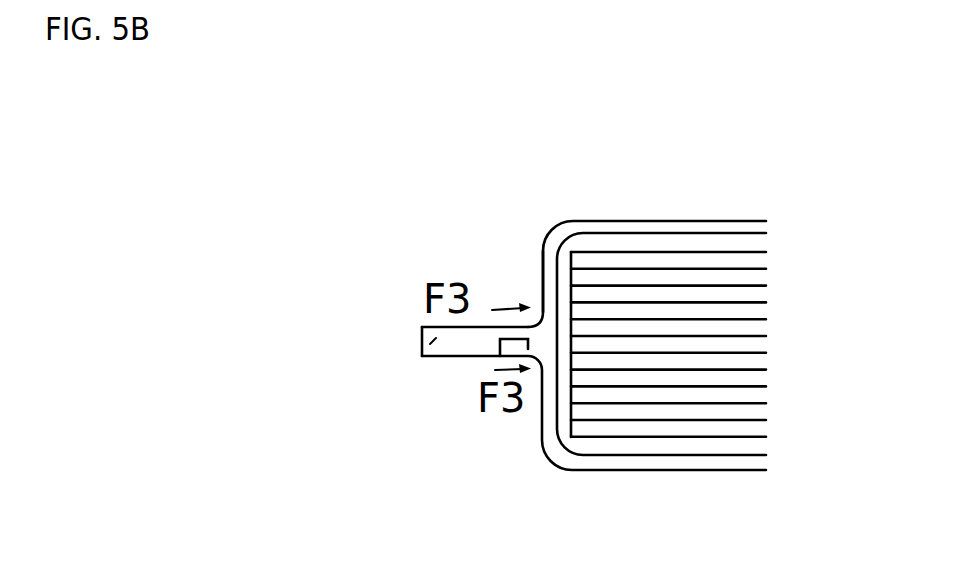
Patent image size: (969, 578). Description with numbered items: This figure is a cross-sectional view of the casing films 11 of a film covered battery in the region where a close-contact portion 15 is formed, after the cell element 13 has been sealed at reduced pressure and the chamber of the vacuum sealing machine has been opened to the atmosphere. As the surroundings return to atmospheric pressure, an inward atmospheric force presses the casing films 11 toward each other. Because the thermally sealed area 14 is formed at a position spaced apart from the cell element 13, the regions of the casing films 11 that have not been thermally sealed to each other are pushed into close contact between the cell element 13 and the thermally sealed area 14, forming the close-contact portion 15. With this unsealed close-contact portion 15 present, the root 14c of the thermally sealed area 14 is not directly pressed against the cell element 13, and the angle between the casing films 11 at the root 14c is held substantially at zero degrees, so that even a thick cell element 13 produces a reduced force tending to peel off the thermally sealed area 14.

The casing films 11 is at (703, 222).
The cell element 13 is at (757, 338).
The thermally sealed area 14 is at (422, 355).
The root of thermally sealed area 14c is at (492, 348).
The close-contact portion 15 is at (541, 316).